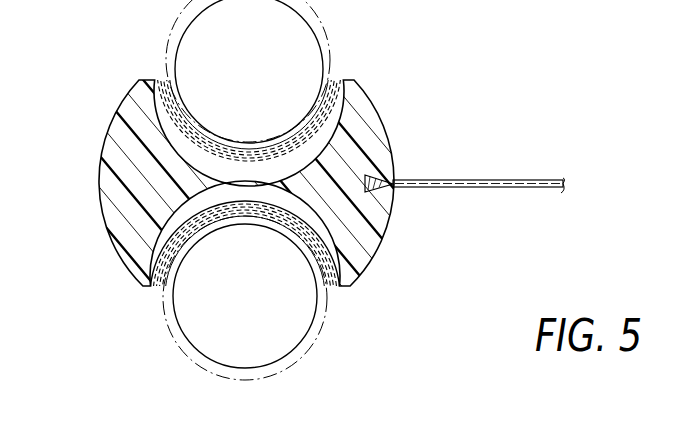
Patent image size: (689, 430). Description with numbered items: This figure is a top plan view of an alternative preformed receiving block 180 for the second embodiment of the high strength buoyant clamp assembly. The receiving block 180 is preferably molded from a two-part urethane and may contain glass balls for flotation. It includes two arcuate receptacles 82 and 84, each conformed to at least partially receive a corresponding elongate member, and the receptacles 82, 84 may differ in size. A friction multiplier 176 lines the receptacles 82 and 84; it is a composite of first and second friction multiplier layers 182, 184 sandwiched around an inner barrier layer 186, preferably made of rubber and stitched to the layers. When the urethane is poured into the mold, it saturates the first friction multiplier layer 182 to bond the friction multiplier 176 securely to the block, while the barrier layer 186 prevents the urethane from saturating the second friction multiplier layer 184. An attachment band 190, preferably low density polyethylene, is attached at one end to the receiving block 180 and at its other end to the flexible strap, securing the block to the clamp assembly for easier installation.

The receiving block 180 is at (118, 191).
The friction multiplier 176 is at (158, 80).
The receptacle 82 is at (175, 141).
The receptacle 84 is at (330, 244).
The first friction multiplier layer 182 is at (337, 290).
The second friction multiplier layer 184 is at (163, 287).
The barrier layer 186 is at (157, 287).
The attachment band 190 is at (475, 182).